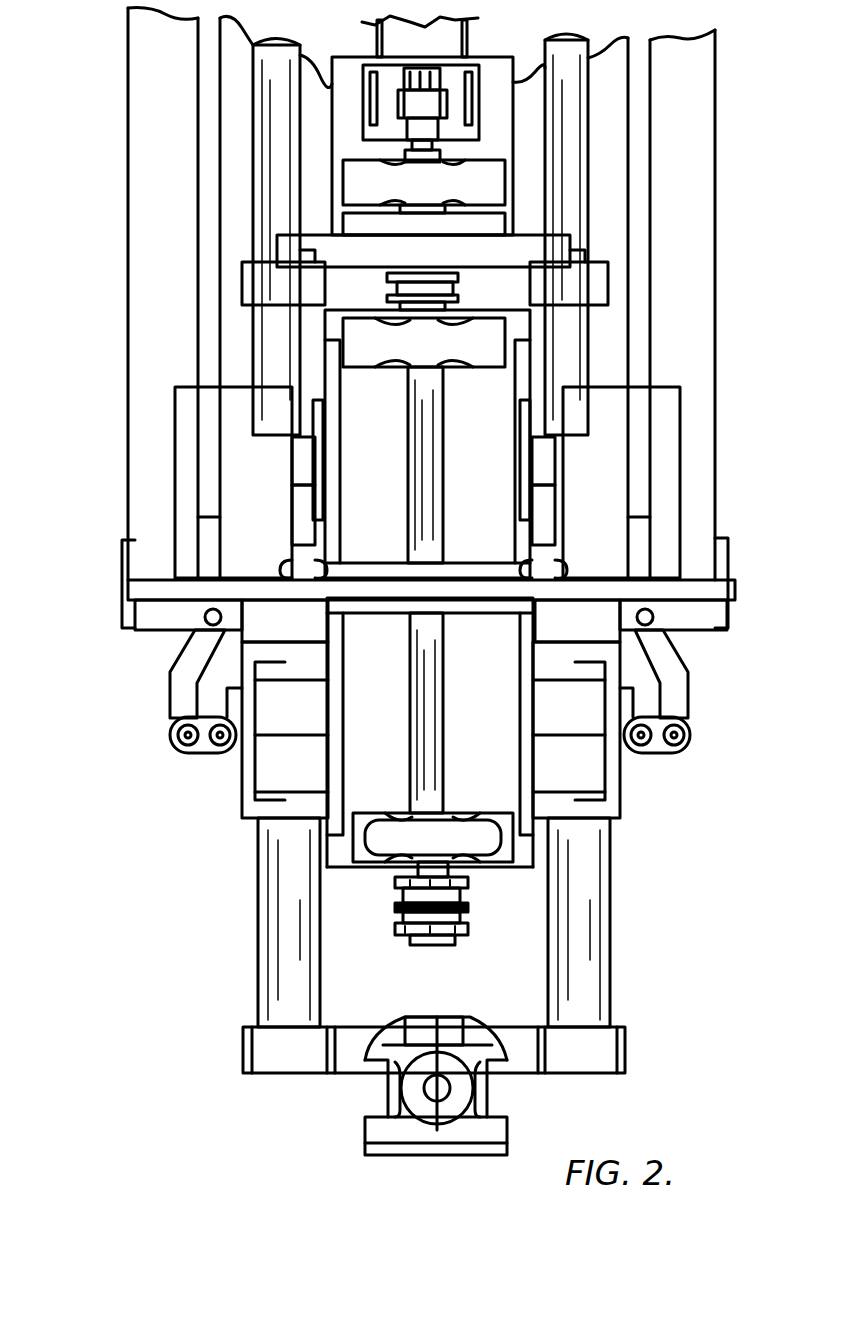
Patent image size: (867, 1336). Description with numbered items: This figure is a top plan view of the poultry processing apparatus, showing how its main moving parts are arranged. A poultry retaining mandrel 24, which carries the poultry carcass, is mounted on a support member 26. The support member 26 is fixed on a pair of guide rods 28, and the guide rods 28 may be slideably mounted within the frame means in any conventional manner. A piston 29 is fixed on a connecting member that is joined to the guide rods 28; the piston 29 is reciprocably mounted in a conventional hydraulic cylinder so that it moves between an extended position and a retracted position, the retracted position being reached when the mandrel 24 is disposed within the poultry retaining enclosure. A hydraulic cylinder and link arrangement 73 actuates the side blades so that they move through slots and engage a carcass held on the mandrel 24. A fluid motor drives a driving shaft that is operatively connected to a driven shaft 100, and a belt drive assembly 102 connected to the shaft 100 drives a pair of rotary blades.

The poultry retaining mandrel 24 is at (458, 1093).
The support member 26 is at (386, 1087).
The guide rods 28 is at (262, 940).
The piston 29 is at (260, 465).
The hydraulic cylinder and link arrangement 73 is at (182, 685).
The driven shaft 100 is at (420, 430).
The belt drive assembly 102 is at (412, 915).